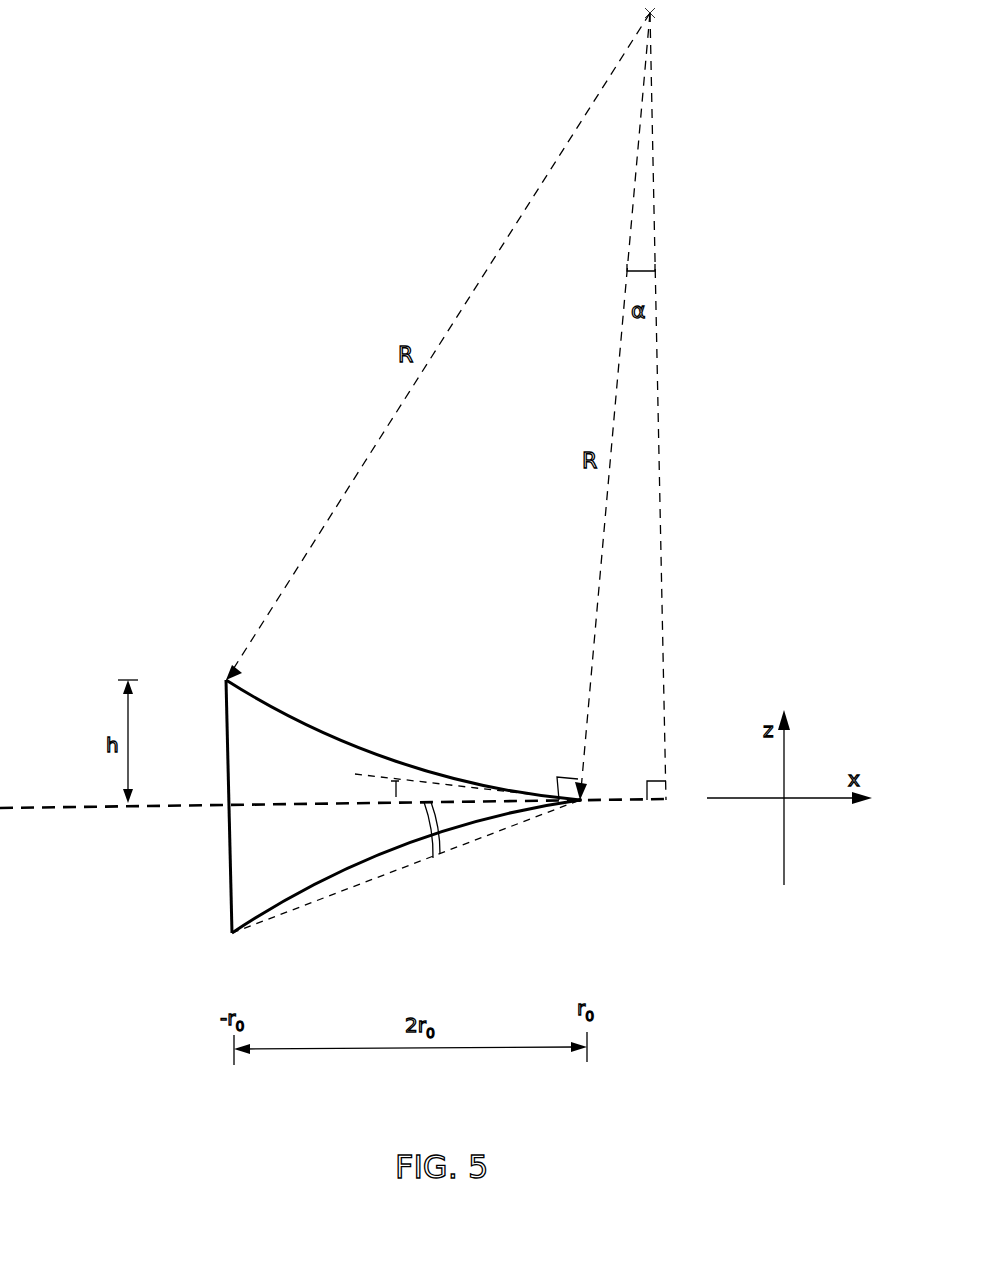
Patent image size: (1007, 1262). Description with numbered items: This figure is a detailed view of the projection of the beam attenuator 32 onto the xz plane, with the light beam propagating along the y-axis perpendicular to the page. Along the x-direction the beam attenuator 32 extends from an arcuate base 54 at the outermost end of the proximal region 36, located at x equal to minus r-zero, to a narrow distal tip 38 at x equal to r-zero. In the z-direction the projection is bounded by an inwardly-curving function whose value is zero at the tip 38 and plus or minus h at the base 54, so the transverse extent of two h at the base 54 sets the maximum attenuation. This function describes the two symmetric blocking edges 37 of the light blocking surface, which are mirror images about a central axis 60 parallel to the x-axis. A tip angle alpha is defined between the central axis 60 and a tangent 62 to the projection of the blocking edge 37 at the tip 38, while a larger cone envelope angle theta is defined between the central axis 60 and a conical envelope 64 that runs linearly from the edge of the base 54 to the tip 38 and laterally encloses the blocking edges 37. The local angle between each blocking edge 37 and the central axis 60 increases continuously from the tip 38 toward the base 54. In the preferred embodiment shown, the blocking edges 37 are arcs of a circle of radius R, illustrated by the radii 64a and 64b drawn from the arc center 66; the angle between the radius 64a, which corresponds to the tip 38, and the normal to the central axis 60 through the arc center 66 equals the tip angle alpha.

The beam attenuator 32 is at (270, 567).
The proximal region 36 is at (200, 697).
The blocking edges 37 is at (358, 740).
The distal tip 38 is at (580, 803).
The arcuate base 54 is at (230, 895).
The central axis 60 is at (48, 812).
The tangent 62 is at (416, 777).
The conical envelope 64 is at (465, 845).
The radius 64a is at (600, 605).
The radius 64b is at (453, 323).
The arc center 66 is at (648, 12).